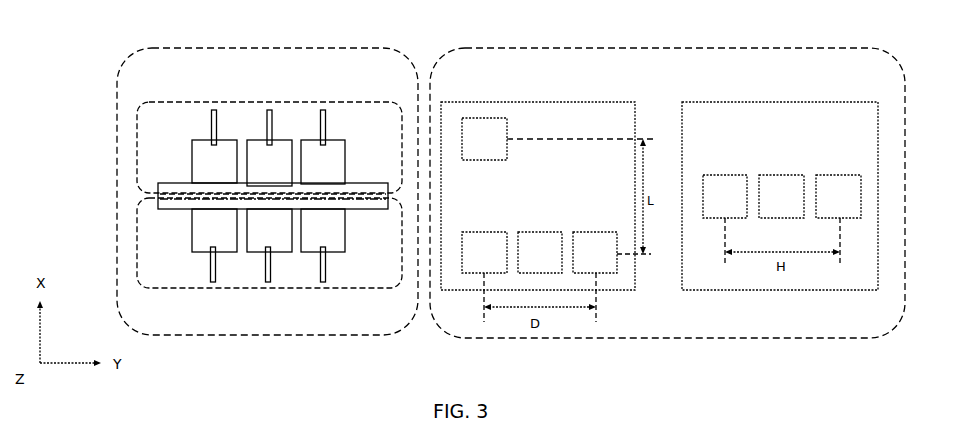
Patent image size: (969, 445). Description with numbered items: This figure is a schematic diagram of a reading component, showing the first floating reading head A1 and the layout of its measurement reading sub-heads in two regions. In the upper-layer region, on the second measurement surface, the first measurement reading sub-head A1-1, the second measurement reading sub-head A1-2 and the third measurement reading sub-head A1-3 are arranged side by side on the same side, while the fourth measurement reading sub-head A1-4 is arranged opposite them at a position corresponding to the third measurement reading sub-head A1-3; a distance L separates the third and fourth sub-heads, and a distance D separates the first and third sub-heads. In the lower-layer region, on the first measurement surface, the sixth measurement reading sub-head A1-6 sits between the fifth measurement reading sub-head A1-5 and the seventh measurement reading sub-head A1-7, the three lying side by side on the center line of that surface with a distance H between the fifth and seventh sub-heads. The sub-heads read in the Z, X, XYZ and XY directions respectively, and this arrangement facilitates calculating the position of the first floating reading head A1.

The first floating reading head A1 is at (267, 179).
The first measurement reading sub-head A1-1 is at (451, 191).
The second measurement reading sub-head A1-2 is at (396, 191).
The third measurement reading sub-head A1-3 is at (339, 191).
The fourth measurement reading sub-head A1-4 is at (484, 150).
The fifth measurement reading sub-head A1-5 is at (458, 219).
The sixth measurement reading sub-head A1-6 is at (514, 219).
The seventh measurement reading sub-head A1-7 is at (572, 219).